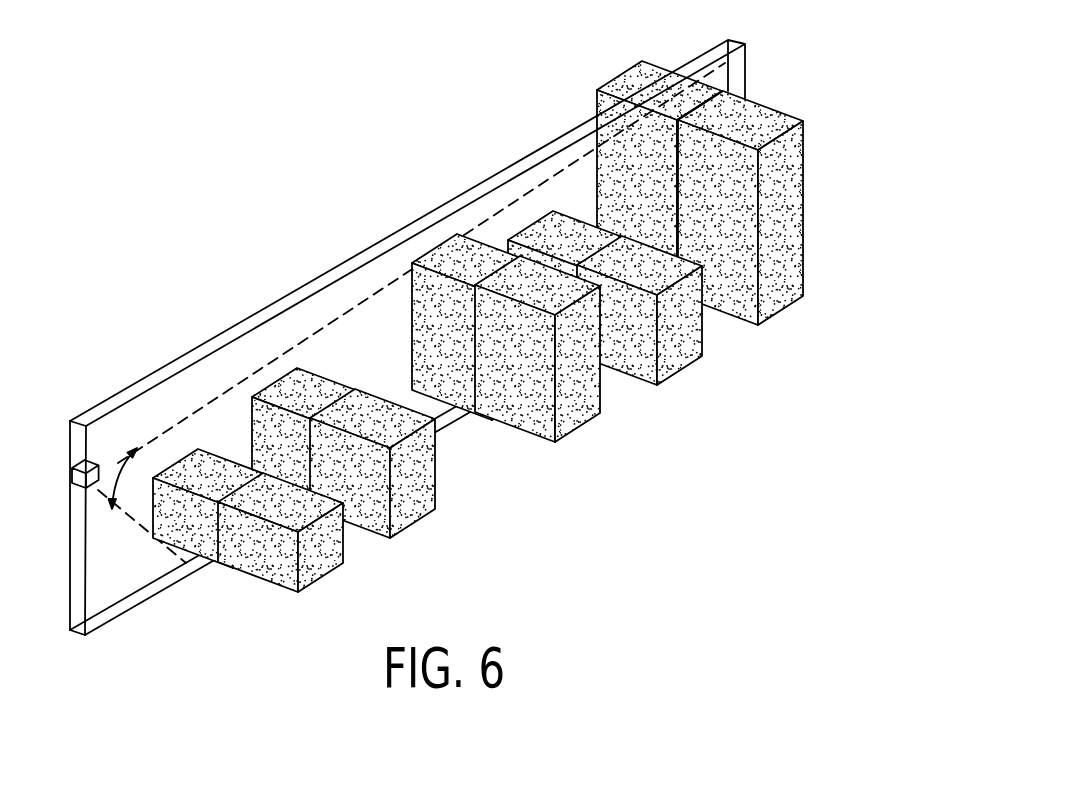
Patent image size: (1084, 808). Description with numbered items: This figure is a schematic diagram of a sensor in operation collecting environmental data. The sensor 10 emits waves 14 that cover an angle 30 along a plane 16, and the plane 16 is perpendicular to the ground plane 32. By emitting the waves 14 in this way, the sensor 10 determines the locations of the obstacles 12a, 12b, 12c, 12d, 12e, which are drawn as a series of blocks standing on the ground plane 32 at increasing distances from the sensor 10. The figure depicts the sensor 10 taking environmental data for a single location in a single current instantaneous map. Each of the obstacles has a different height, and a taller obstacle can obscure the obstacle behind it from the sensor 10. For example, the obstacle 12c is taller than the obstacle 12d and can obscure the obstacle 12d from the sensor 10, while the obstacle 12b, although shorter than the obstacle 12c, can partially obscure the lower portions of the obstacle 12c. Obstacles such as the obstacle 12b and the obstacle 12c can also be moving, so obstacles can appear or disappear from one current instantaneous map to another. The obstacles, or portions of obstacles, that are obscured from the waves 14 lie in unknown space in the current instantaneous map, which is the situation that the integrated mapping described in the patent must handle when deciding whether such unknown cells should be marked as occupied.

The sensor 10 is at (76, 479).
The obstacle 12a is at (342, 562).
The obstacle 12b is at (433, 510).
The obstacle 12c is at (597, 413).
The obstacle 12d is at (702, 355).
The obstacle 12e is at (803, 297).
The waves 14 is at (280, 353).
The plane 16 is at (171, 362).
The angle 30 is at (135, 449).
The ground plane 32 is at (233, 605).